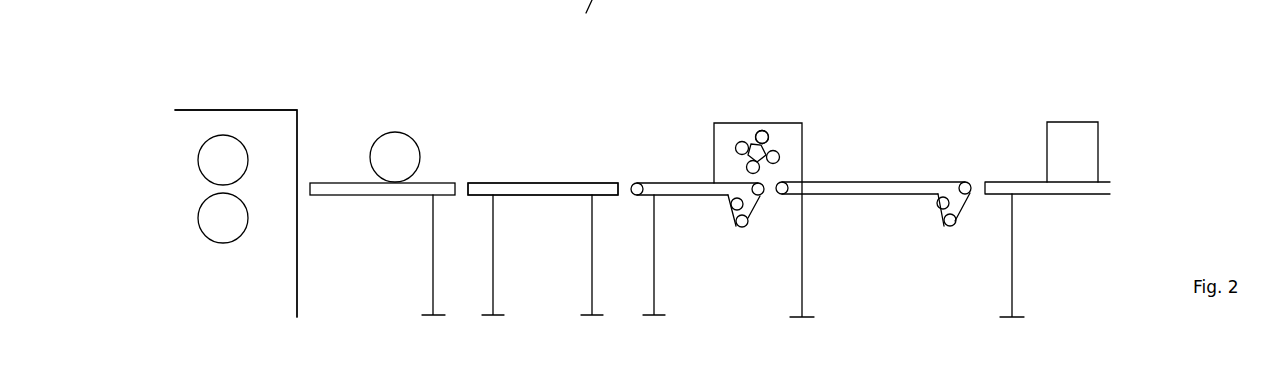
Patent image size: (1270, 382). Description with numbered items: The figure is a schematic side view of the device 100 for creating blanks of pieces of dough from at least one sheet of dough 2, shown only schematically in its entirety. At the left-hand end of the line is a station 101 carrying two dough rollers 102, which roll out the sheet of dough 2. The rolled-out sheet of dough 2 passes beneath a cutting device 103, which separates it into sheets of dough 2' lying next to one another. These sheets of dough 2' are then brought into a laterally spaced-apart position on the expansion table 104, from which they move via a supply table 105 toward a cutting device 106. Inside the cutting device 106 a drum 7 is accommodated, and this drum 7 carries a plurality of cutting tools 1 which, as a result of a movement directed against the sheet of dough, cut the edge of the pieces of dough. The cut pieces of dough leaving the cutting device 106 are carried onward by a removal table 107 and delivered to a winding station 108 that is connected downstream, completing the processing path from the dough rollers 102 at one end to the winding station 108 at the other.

The device 100 is at (618, 135).
The supply station 101 is at (247, 125).
The dough rollers 102 is at (217, 217).
The cutting device 103 is at (402, 145).
The expansion table 104 is at (535, 187).
The supply table 105 is at (682, 187).
The cutting device 106 is at (788, 140).
The removal table 107 is at (895, 185).
The winding station 108 is at (1067, 148).
The cutting tools 1 is at (768, 128).
The sheet of dough 2 is at (382, 193).
The sheets of dough 2' is at (562, 158).
The drum 7 is at (759, 120).